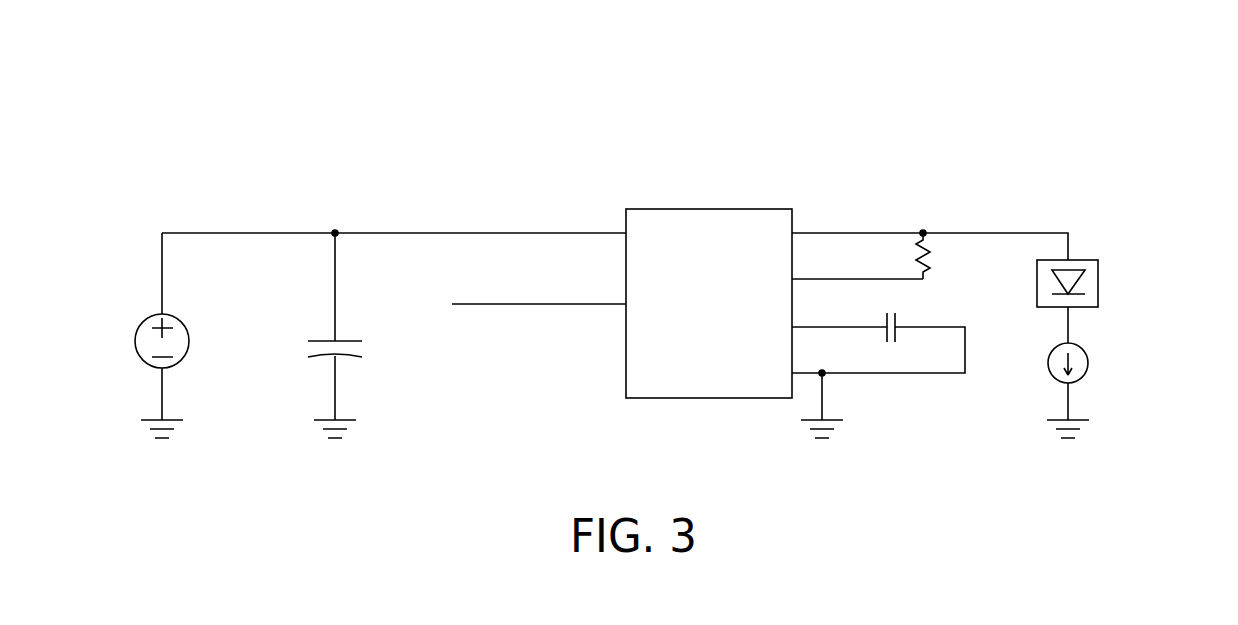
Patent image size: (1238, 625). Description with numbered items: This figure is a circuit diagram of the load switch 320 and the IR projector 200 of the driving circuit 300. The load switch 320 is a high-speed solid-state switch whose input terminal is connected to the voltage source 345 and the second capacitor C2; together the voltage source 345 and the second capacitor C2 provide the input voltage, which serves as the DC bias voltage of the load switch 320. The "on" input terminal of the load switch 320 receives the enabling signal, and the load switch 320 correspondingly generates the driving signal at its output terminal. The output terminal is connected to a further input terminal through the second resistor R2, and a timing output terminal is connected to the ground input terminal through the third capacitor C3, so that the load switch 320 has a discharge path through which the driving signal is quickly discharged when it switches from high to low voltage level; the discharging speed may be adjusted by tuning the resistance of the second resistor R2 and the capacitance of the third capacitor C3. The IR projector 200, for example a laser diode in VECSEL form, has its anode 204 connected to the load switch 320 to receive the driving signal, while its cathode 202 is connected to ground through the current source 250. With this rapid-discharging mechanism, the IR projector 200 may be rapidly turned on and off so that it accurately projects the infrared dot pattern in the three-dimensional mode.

The driving circuit 300 is at (747, 80).
The load switch 320 is at (707, 209).
The voltage source 345 is at (189, 341).
The IR projector 200 is at (1102, 286).
The anode 204 is at (1068, 268).
The cathode 202 is at (1077, 297).
The current source 250 is at (1088, 363).
The second capacitor C2 is at (350, 357).
The second resistor R2 is at (930, 265).
The third capacitor C3 is at (895, 317).